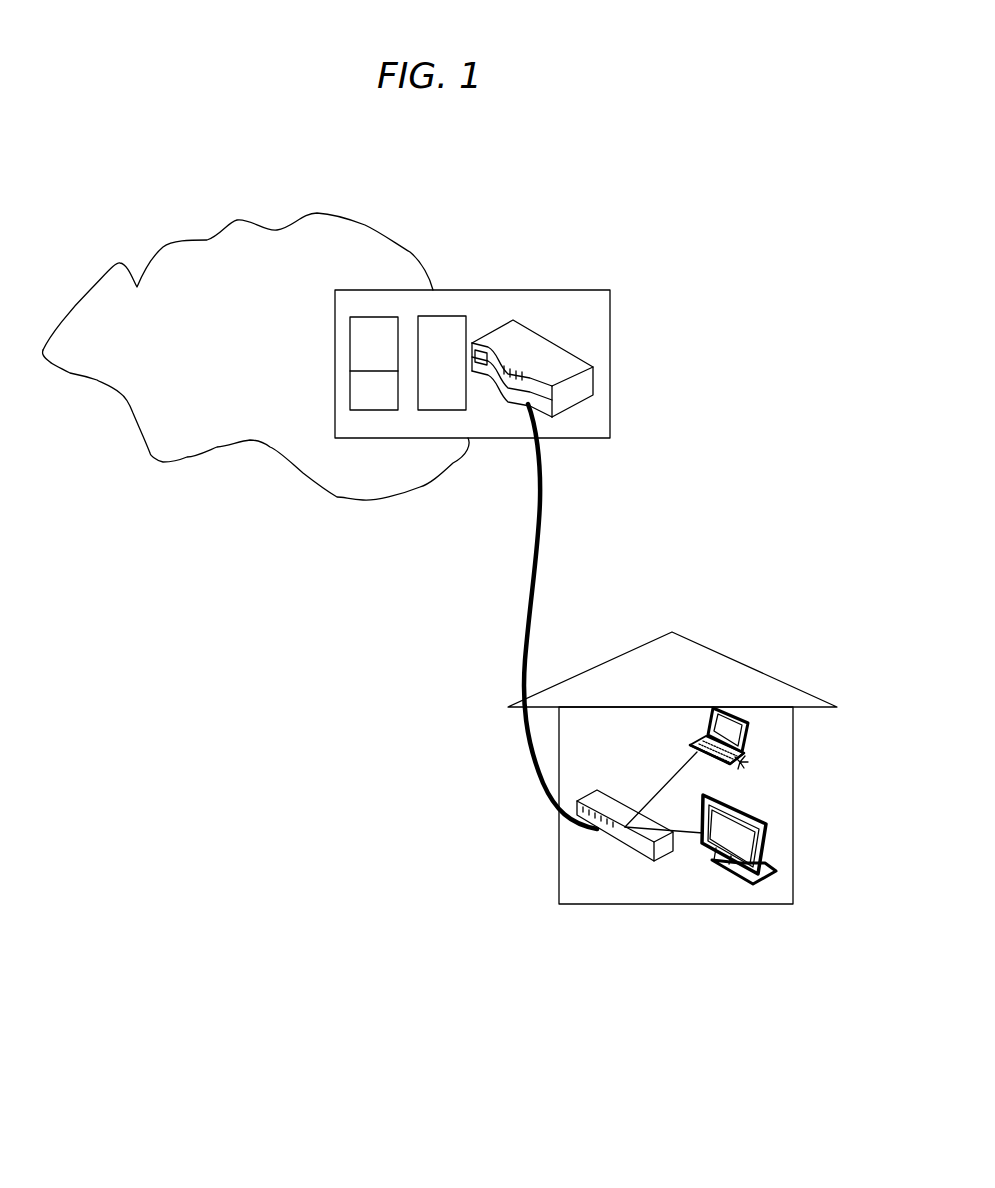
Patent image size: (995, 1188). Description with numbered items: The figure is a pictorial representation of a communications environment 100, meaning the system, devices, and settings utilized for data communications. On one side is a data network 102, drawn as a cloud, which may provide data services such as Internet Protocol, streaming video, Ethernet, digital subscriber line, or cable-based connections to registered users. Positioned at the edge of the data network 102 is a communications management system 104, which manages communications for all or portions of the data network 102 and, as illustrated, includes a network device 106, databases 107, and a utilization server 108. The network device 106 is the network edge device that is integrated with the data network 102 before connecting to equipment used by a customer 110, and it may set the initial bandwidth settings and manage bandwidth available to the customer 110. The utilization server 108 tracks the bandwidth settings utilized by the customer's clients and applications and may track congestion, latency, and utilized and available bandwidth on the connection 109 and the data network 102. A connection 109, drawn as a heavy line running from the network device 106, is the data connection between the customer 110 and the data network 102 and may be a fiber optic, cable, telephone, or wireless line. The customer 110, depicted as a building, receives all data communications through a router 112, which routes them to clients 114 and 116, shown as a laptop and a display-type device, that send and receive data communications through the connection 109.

The communications environment 100 is at (168, 150).
The data network 102 is at (283, 380).
The communications management system 104 is at (488, 290).
The network device 106 is at (562, 382).
The databases 107 is at (370, 348).
The utilization server 108 is at (442, 390).
The connection 109 is at (540, 552).
The customer 110 is at (709, 640).
The router 112 is at (618, 840).
The client 114 is at (742, 752).
The client 116 is at (732, 875).